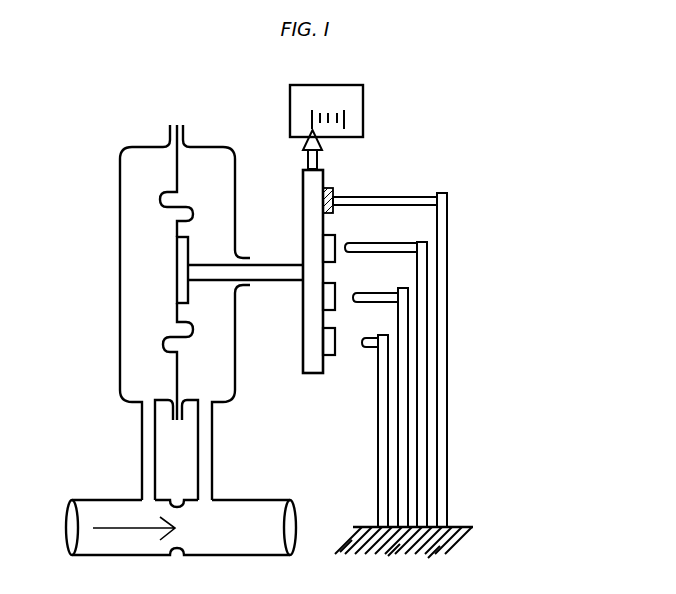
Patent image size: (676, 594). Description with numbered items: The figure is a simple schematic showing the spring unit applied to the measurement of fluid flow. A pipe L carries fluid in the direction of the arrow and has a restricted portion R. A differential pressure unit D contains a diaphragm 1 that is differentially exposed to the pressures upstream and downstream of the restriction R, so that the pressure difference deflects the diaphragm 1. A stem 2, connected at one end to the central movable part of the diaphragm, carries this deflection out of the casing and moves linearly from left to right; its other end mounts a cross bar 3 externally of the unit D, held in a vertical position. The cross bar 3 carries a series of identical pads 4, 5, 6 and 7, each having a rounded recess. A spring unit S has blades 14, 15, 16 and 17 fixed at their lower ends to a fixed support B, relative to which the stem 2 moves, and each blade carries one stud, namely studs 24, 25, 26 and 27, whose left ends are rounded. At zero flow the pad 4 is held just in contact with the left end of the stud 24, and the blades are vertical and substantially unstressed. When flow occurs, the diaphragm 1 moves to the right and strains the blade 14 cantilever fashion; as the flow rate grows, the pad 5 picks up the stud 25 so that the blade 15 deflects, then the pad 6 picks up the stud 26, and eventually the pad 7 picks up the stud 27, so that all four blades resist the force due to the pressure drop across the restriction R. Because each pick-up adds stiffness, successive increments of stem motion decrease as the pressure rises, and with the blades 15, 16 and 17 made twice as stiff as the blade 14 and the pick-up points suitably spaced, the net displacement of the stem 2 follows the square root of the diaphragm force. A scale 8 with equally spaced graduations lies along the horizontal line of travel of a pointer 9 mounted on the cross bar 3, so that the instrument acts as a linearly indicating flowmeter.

The diaphragm 1 is at (175, 226).
The stem 2 is at (272, 266).
The cross bar 3 is at (303, 311).
The pad 4 is at (334, 190).
The pad 5 is at (337, 243).
The pad 6 is at (337, 291).
The pad 7 is at (337, 339).
The scale 8 is at (365, 115).
The pointer 9 is at (318, 165).
The blade 14 is at (448, 220).
The blade 15 is at (428, 297).
The blade 16 is at (410, 358).
The blade 17 is at (390, 420).
The stud 24 is at (393, 197).
The stud 25 is at (372, 243).
The stud 26 is at (366, 293).
The stud 27 is at (361, 349).
The differential pressure unit D is at (98, 214).
The pipe L is at (98, 484).
The restricted portion R is at (188, 519).
The spring unit S is at (485, 450).
The fixed support B is at (460, 526).